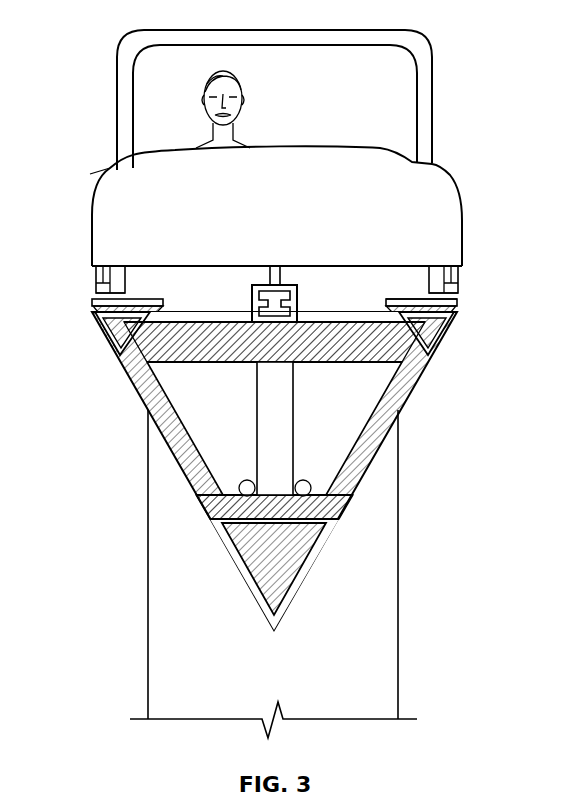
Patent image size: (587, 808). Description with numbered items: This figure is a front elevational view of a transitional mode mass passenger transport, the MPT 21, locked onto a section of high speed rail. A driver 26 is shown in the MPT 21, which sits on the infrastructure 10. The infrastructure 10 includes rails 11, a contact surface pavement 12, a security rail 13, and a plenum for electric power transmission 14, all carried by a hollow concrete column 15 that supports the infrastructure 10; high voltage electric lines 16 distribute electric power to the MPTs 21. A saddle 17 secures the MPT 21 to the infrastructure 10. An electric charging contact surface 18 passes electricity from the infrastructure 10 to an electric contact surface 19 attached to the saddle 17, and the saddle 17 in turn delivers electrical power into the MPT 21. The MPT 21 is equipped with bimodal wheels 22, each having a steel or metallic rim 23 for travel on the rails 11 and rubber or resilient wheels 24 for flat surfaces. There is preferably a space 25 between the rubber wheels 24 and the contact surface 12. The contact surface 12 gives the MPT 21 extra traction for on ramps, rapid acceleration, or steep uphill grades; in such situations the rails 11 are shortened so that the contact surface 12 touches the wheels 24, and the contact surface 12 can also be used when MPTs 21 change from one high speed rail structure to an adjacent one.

The infrastructure 10 is at (310, 355).
The rails 11 is at (464, 293).
The contact surface pavement 12 is at (141, 290).
The security rail 13 is at (262, 330).
The plenum for electric power transmission 14 is at (246, 478).
The hollow concrete column 15 is at (265, 667).
The high voltage electric lines 16 is at (240, 492).
The saddle 17 is at (262, 276).
The electric charging contact surface 18 is at (252, 314).
The electric contact surface 19 is at (283, 295).
The MPT 21 is at (442, 50).
The bimodal wheels 22 is at (96, 275).
The steel or metallic rim 23 is at (462, 277).
The rubber or resilient wheels 24 is at (423, 280).
The space 25 is at (405, 295).
The driver 26 is at (252, 104).